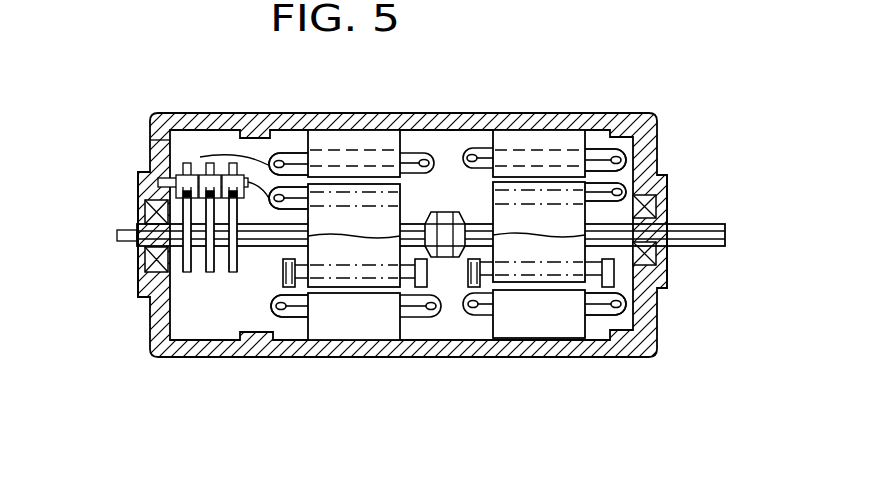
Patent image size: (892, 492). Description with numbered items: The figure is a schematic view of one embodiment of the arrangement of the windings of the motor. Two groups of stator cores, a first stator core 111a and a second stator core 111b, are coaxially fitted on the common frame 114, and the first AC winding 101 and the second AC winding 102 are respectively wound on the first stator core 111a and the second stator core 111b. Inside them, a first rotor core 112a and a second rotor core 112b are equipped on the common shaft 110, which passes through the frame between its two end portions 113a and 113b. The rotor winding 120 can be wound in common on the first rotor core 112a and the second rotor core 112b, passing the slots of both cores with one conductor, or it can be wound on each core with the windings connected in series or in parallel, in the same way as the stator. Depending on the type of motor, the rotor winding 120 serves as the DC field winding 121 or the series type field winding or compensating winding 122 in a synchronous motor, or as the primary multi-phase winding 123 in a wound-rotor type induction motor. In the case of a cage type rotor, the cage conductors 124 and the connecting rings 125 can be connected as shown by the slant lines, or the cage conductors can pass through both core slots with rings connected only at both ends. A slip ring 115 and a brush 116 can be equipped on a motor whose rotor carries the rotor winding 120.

The first AC winding 101 is at (423, 127).
The second AC winding 102 is at (480, 147).
The common shaft 110 is at (128, 243).
The first stator core 111a is at (353, 143).
The second stator core 111b is at (560, 140).
The first rotor core 112a is at (338, 273).
The second rotor core 112b is at (615, 272).
The left end bracket 113a is at (157, 142).
The right end bracket 113b is at (652, 136).
The common frame 114 is at (328, 117).
The slip ring 115 is at (215, 275).
The brush 116 is at (165, 152).
The rotor winding 120 is at (265, 185).
The DC field winding 121 is at (254, 102).
The series type field winding 122 is at (517, 136).
The primary multi-phase winding 123 is at (517, 201).
The cage conductors 124 is at (302, 273).
The connecting rings 125 is at (285, 275).